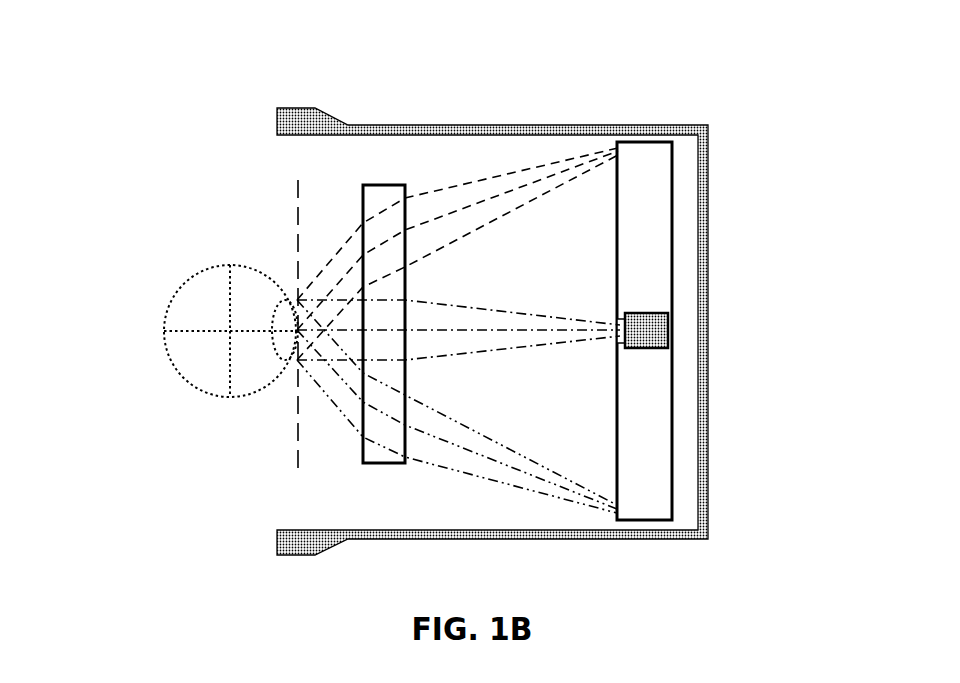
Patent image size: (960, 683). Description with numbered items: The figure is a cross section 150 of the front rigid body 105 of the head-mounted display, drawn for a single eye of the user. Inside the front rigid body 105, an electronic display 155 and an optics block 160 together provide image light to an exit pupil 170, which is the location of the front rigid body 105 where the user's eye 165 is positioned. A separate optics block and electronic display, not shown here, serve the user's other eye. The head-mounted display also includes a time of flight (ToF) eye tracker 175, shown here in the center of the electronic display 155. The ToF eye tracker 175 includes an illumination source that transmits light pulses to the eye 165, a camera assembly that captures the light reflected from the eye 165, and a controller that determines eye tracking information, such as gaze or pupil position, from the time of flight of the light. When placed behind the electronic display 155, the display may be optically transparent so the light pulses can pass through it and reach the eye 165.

The cross section 150 is at (50, 32).
The front rigid body 105 is at (673, 125).
The electronic display 155 is at (672, 172).
The optics block 160 is at (362, 203).
The eye 165 is at (193, 275).
The exit pupil 170 is at (293, 458).
The time of flight (ToF) eye tracker 175 is at (675, 332).